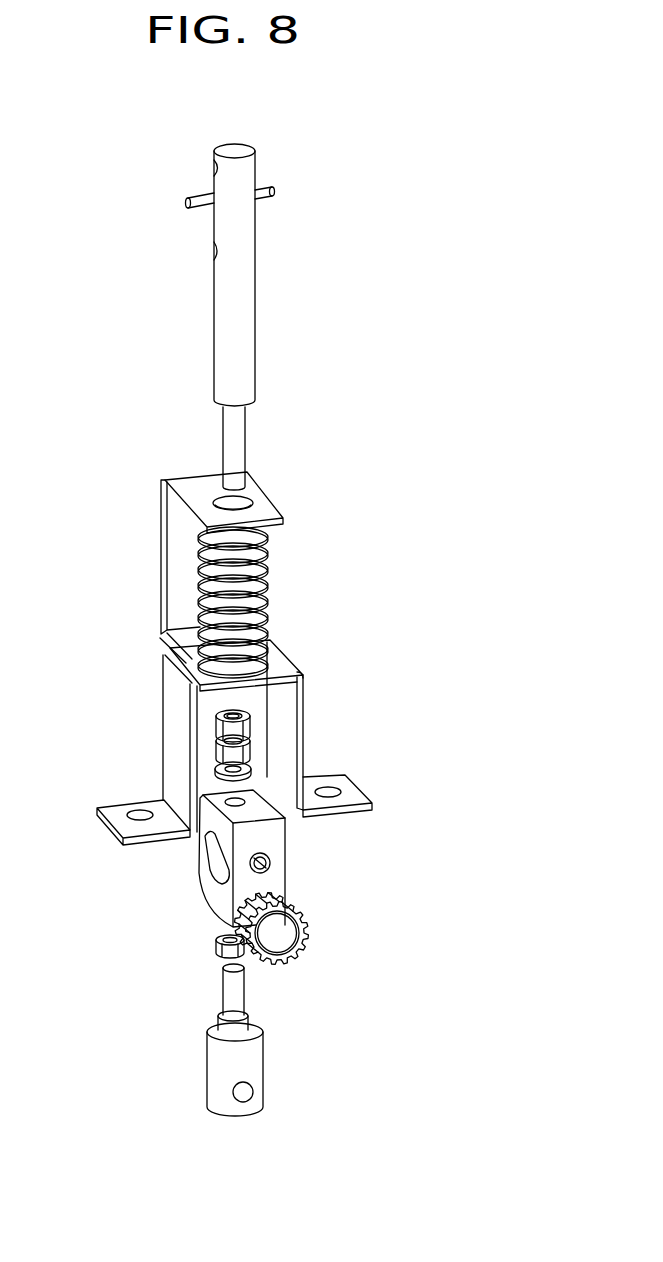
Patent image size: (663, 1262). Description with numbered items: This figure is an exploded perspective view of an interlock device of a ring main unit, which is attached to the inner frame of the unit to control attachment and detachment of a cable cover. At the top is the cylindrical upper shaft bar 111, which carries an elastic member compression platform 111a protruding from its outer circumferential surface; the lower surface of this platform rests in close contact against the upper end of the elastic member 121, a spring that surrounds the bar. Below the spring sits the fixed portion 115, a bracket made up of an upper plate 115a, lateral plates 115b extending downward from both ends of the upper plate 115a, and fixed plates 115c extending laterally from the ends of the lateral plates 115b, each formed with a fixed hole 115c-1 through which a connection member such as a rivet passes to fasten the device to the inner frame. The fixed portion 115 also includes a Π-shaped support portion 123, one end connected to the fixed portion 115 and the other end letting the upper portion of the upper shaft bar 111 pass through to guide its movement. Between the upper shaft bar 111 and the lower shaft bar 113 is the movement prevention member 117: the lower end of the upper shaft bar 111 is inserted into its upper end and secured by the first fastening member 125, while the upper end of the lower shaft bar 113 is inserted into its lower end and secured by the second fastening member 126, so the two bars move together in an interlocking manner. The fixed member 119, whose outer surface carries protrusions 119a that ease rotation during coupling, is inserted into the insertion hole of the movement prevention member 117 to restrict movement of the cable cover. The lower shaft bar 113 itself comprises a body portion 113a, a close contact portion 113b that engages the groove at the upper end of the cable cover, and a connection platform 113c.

The upper shaft bar 111 is at (240, 233).
The elastic member compression platform 111a is at (266, 191).
The lower shaft bar 113 is at (168, 1040).
The body portion 113a is at (225, 1073).
The close contact portion 113b is at (220, 1025).
The connection platform 113c is at (230, 993).
The fixed portion 115 is at (283, 662).
The upper plate 115a is at (278, 662).
The lateral plate 115b is at (300, 718).
The fixed plate 115c is at (337, 812).
The fixed hole 115c-1 is at (330, 790).
The movement prevention member 117 is at (292, 866).
The fixed member 119 is at (317, 947).
The protrusions 119a is at (293, 964).
The elastic member 121 is at (265, 568).
The support portion 123 is at (270, 507).
The first fastening member 125 is at (228, 727).
The second fastening member 126 is at (222, 946).